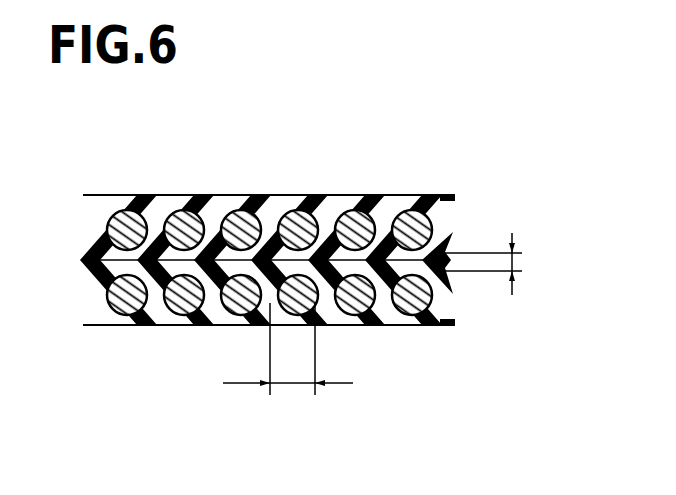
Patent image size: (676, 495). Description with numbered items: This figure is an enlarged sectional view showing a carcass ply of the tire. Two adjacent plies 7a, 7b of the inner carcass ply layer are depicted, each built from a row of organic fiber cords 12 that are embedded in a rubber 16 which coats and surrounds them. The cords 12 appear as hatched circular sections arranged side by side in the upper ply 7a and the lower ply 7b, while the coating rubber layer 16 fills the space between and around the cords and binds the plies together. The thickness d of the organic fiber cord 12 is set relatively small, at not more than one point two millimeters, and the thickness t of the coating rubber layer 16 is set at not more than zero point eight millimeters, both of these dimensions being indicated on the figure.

The ply 7a is at (213, 207).
The ply 7b is at (210, 308).
The organic fiber cord 12 is at (352, 205).
The coating rubber layer 16 is at (385, 212).
The thickness of the organic fiber cord d is at (288, 367).
The thickness of the coating rubber layer t is at (518, 262).